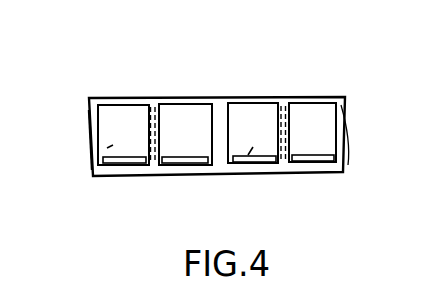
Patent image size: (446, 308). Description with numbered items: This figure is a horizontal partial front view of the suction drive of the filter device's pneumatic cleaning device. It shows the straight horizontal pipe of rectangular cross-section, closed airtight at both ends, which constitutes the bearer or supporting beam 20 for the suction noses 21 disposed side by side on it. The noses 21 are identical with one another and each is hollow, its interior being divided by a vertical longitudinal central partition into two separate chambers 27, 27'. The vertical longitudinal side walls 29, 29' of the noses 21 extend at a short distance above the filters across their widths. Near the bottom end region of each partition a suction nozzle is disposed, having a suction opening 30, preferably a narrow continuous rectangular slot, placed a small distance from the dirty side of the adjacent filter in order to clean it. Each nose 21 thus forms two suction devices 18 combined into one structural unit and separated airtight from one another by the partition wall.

The suction device 18 is at (107, 118).
The bearer or supporting beam 20 is at (340, 113).
The suction nose 21 is at (128, 112).
The chamber 27 is at (218, 166).
The chamber 27' is at (73, 165).
The vertical longitudinal side wall 29 is at (145, 163).
The vertical longitudinal side wall 29' is at (291, 103).
The suction opening 30 is at (178, 166).